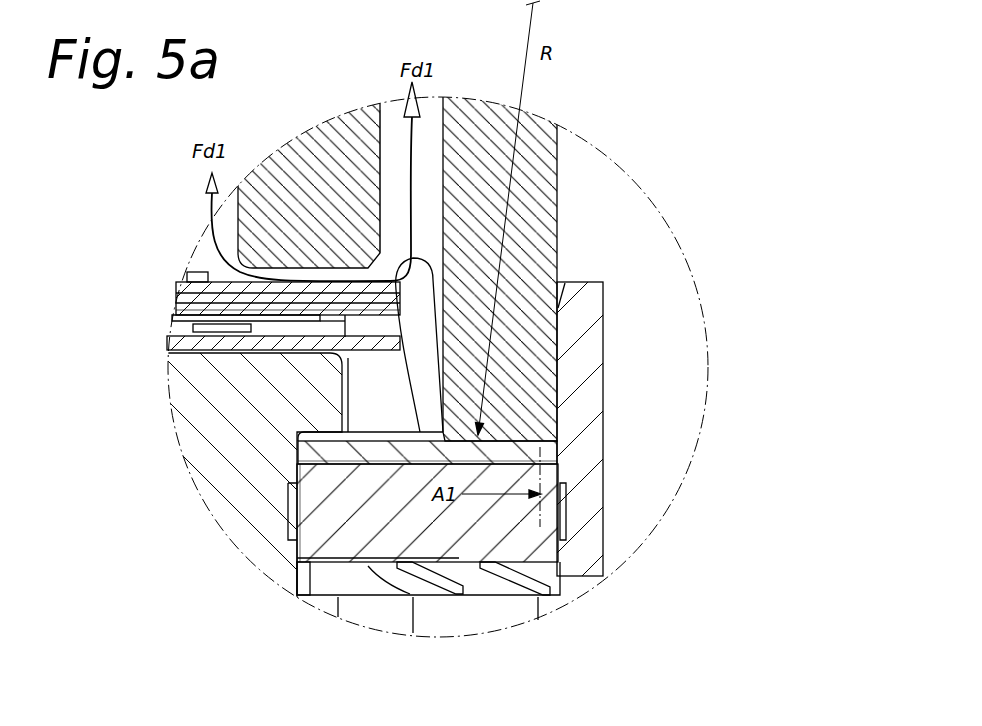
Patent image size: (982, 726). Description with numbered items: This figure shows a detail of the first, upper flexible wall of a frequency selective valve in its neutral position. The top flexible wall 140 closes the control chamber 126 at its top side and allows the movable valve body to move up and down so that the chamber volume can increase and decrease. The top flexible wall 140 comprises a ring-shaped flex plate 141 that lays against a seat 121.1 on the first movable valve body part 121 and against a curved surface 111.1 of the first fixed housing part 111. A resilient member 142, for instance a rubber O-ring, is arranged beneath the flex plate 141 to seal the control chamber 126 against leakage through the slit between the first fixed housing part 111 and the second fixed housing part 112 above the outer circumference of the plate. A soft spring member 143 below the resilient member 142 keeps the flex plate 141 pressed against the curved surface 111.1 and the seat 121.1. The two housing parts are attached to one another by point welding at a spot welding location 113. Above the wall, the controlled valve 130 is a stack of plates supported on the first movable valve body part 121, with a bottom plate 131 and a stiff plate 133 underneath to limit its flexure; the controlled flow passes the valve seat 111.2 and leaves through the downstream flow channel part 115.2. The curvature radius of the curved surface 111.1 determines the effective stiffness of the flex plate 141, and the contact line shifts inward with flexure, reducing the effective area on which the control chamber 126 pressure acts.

The first fixed housing part 111 is at (527, 170).
The curved surface 111.1 is at (490, 437).
The valve seat 111.2 is at (338, 278).
The second fixed housing part 112 is at (577, 363).
The spot welding location 113 is at (560, 340).
The downstream flow channel part 115.2 is at (391, 138).
The first movable valve body part 121 is at (205, 383).
The seat 121.1 is at (330, 440).
The control chamber 126 is at (357, 577).
The controlled valve 130 is at (168, 292).
The bottom plate of the stack of plates 131 is at (190, 312).
The stiff plate 133 is at (180, 339).
The top flexible wall 140 is at (594, 472).
The flex plate 141 is at (523, 447).
The resilient member 142 is at (510, 537).
The spring member 143 is at (442, 583).